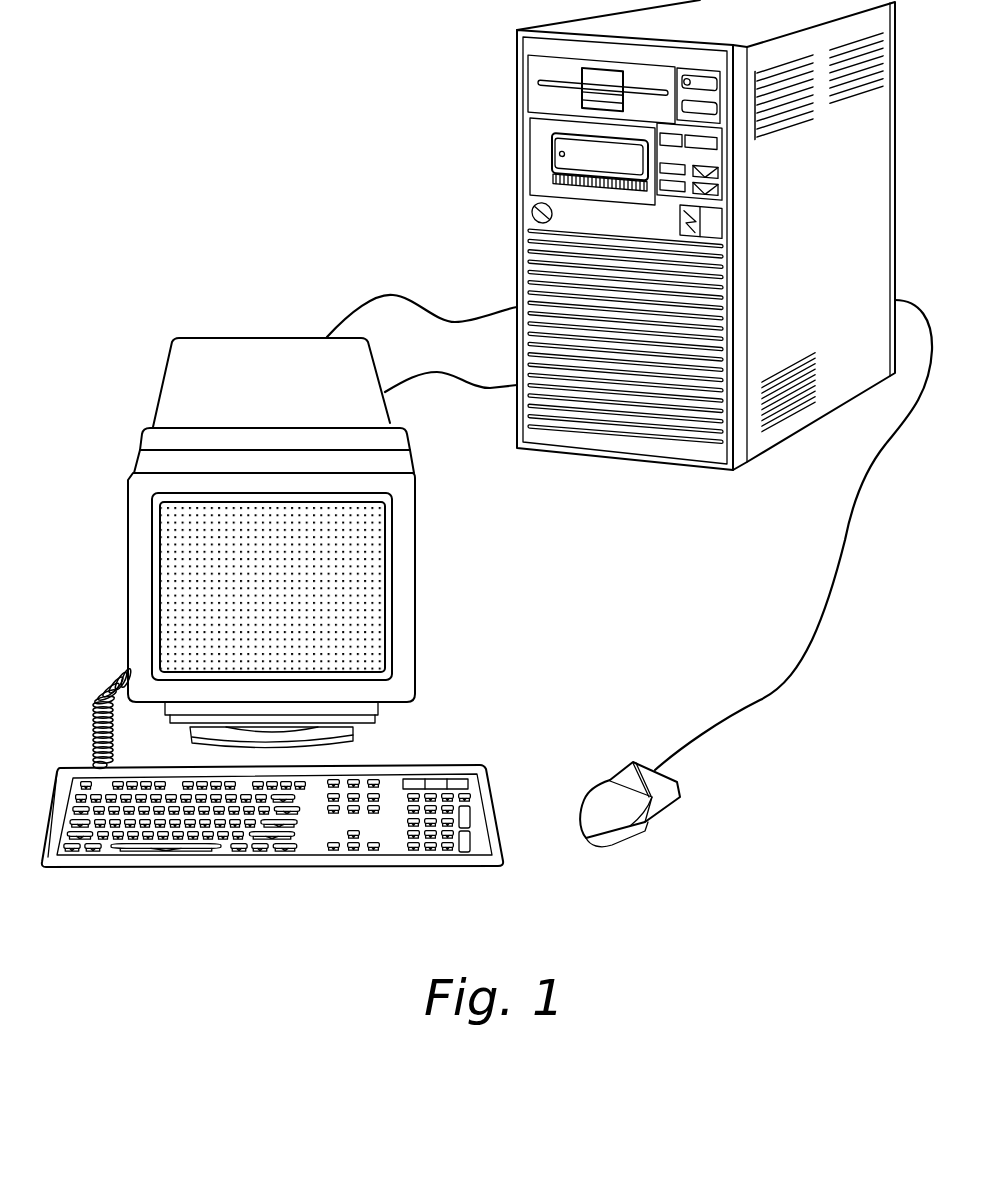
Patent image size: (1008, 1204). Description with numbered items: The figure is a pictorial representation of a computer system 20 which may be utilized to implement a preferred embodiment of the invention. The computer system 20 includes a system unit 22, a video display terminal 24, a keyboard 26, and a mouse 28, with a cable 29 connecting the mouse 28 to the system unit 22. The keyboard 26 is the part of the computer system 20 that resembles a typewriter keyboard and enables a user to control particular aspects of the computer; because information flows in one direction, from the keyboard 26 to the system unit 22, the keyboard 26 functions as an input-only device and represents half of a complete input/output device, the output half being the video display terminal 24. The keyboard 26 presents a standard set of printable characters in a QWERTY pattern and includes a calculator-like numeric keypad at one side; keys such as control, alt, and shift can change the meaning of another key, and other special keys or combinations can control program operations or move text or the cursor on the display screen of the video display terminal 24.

The computer system 20 is at (300, 207).
The system unit 22 is at (535, 195).
The video display terminal 24 is at (287, 360).
The keyboard 26 is at (304, 860).
The mouse 28 is at (635, 823).
The cable 29 is at (793, 677).